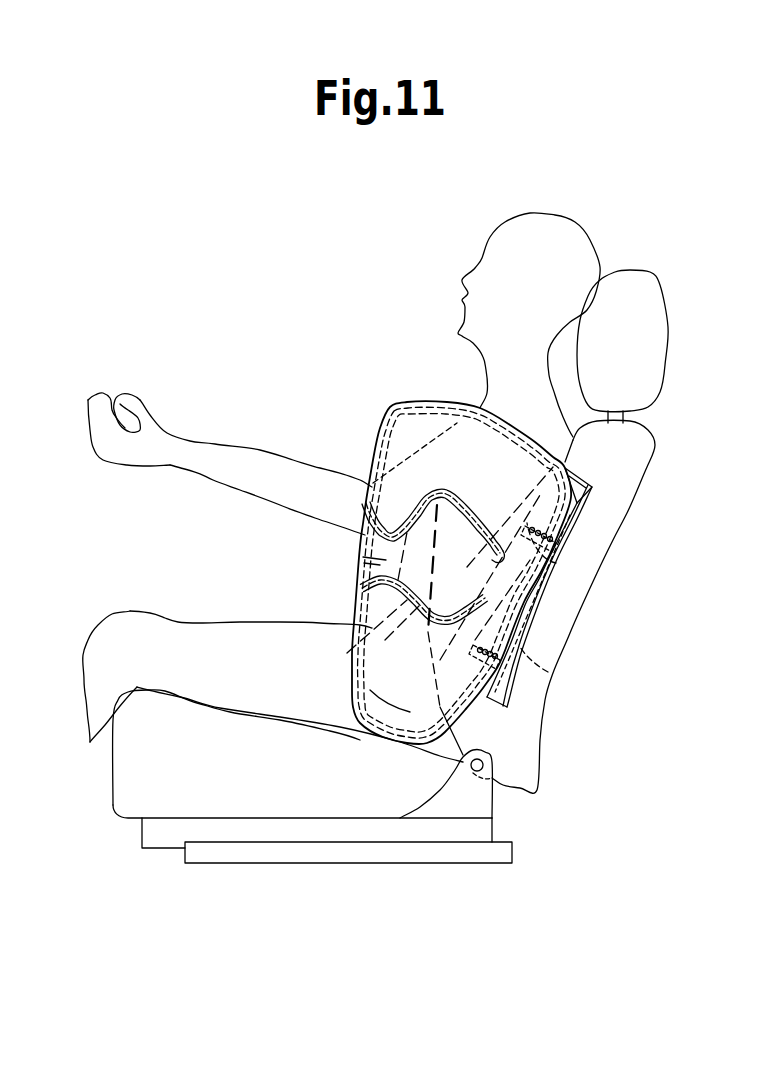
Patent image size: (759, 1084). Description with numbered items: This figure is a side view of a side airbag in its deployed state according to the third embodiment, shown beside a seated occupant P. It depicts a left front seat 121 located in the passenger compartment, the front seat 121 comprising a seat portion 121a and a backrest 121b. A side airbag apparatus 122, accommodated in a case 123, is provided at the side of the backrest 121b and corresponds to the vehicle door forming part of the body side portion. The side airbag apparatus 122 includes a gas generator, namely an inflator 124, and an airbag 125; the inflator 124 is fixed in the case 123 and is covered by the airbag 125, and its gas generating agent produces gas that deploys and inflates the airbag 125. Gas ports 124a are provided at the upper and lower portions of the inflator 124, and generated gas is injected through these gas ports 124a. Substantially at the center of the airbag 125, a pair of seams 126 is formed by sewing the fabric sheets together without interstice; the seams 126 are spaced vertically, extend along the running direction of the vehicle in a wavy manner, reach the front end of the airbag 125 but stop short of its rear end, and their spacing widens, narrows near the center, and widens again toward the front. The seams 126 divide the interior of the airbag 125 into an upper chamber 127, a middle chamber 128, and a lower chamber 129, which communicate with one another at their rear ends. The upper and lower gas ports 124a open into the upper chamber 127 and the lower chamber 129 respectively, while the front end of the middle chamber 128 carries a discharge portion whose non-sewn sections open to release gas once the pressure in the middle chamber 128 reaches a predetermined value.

The passenger P is at (562, 217).
The front seat 121 is at (397, 571).
The seat portion 121a is at (130, 800).
The backrest 121b is at (533, 747).
The side airbag apparatus 122 is at (580, 587).
The case 123 is at (533, 587).
The inflator 124 is at (535, 620).
The gas ports 124a is at (560, 563).
The airbag 125 is at (382, 411).
The seams 126 is at (529, 512).
The upper chamber 127 is at (460, 440).
The middle chamber 128 is at (368, 558).
The lower chamber 129 is at (383, 693).